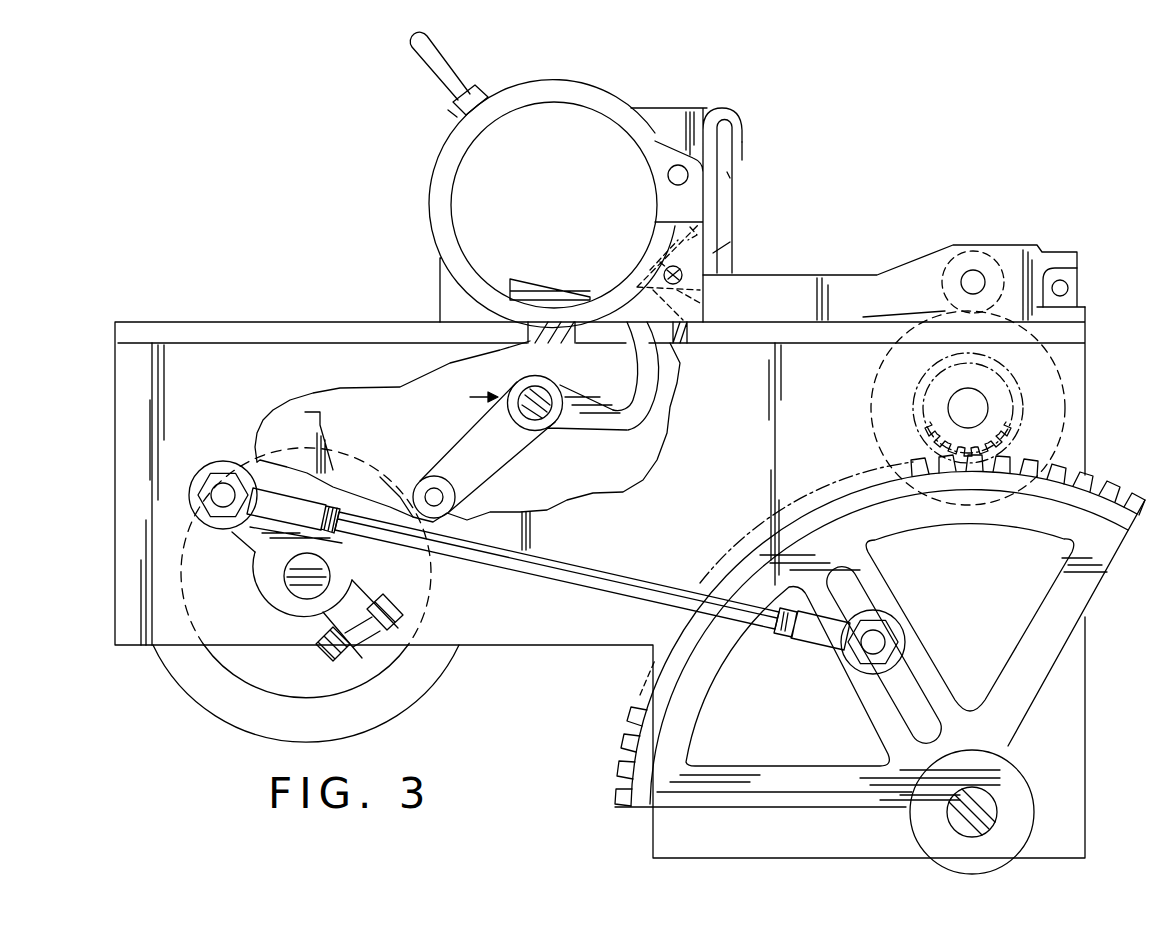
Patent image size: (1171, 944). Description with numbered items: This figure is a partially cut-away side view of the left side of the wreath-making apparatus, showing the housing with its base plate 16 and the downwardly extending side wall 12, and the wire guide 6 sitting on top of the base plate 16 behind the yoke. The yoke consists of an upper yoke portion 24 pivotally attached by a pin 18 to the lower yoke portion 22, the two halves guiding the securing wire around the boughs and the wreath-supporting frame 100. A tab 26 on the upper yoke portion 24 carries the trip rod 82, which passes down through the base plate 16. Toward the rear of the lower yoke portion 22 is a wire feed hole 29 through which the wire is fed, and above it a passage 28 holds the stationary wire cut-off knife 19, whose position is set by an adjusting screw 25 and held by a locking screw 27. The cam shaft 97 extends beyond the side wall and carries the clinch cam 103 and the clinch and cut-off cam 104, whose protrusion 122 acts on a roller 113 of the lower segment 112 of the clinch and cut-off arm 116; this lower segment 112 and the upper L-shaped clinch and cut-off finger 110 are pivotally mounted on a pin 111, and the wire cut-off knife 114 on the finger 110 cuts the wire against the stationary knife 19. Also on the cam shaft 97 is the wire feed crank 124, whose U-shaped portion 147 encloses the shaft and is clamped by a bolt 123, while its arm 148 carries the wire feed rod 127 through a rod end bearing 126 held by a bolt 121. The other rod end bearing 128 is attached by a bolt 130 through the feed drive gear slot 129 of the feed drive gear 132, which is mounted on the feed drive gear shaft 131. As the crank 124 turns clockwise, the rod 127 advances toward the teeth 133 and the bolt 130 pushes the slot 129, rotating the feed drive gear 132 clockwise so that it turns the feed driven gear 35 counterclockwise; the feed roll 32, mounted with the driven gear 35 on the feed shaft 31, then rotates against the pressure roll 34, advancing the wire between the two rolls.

The wire guide 6 is at (850, 285).
The side wall 12 is at (128, 440).
The base plate 16 is at (325, 330).
The pin 18 is at (667, 175).
The wire cut-off knife 19 is at (657, 267).
The lower yoke portion 22 is at (455, 262).
The upper yoke portion 24 is at (510, 105).
The adjusting screw 25 is at (742, 235).
The tab 26 is at (703, 116).
The locking screw 27 is at (683, 273).
The passage 28 is at (718, 190).
The wire feed hole 29 is at (713, 307).
The feed shaft 31 is at (990, 410).
The feed roll 32 is at (1062, 370).
The pressure roll 34 is at (987, 257).
The feed driven gear 35 is at (1000, 423).
The trip rod 82 is at (733, 190).
The cam shaft 97 is at (332, 577).
The wreath-supporting frame 100 is at (556, 296).
The clinch cam 103 is at (372, 716).
The clinch and cut-off cam 104 is at (398, 662).
The clinch and cut-off finger 110 is at (631, 437).
The pin 111 is at (547, 417).
The lower segment 112 is at (487, 463).
The roller 113 is at (430, 484).
The wire cut-off knife 114 is at (658, 356).
The clinch and cut-off arm 116 is at (466, 392).
The bolt 121 is at (222, 507).
The protrusion 122 is at (322, 430).
The bolt 123 is at (400, 604).
The wire feed crank 124 is at (259, 602).
The rod end bearing 126 is at (198, 483).
The wire feed rod 127 is at (590, 583).
The rod end bearing 128 is at (830, 645).
The feed drive gear slot 129 is at (910, 700).
The bolt 130 is at (876, 640).
The feed drive gear shaft 131 is at (985, 808).
The feed drive gear 132 is at (630, 756).
The teeth 133 is at (1120, 488).
The U-shaped portion 147 is at (322, 628).
The arm 148 is at (250, 530).